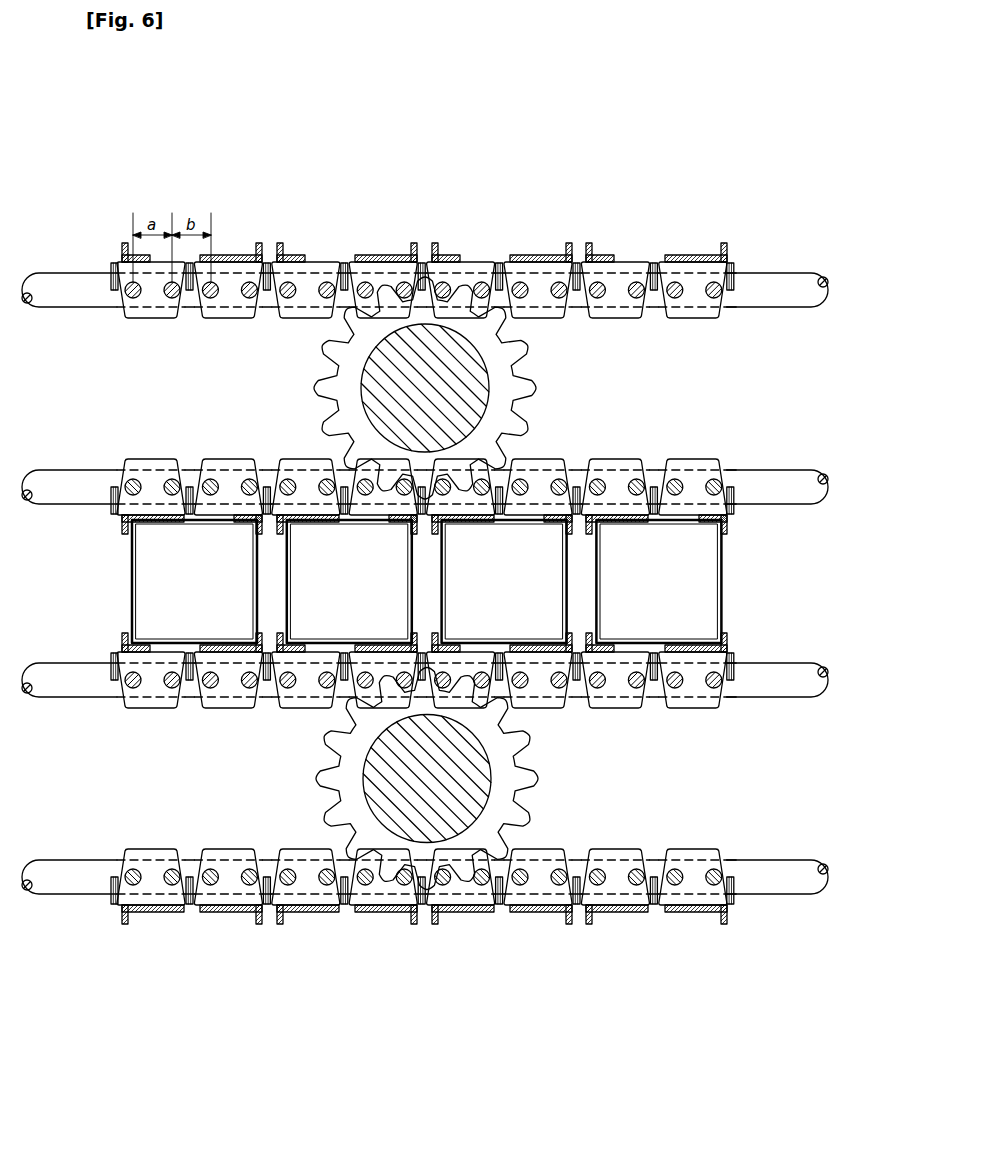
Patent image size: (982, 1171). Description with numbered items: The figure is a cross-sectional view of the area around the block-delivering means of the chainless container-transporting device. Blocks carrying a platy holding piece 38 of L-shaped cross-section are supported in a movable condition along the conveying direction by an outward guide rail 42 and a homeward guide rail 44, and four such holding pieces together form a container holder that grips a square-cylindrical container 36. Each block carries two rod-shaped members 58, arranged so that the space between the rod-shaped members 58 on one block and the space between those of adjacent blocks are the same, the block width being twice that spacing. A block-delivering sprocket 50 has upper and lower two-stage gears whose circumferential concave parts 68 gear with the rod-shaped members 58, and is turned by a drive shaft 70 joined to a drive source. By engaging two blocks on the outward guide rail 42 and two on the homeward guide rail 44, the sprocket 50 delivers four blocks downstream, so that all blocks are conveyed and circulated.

The square-cylindrical container 36 is at (134, 583).
The holding piece 38 is at (434, 244).
The outward guide rail 42 is at (752, 665).
The homeward guide rail 44 is at (780, 272).
The block-delivering sprocket 50 is at (365, 567).
The rod-shaped member 58 is at (488, 284).
The concave part 68 is at (344, 330).
The drive shaft 70 is at (401, 324).